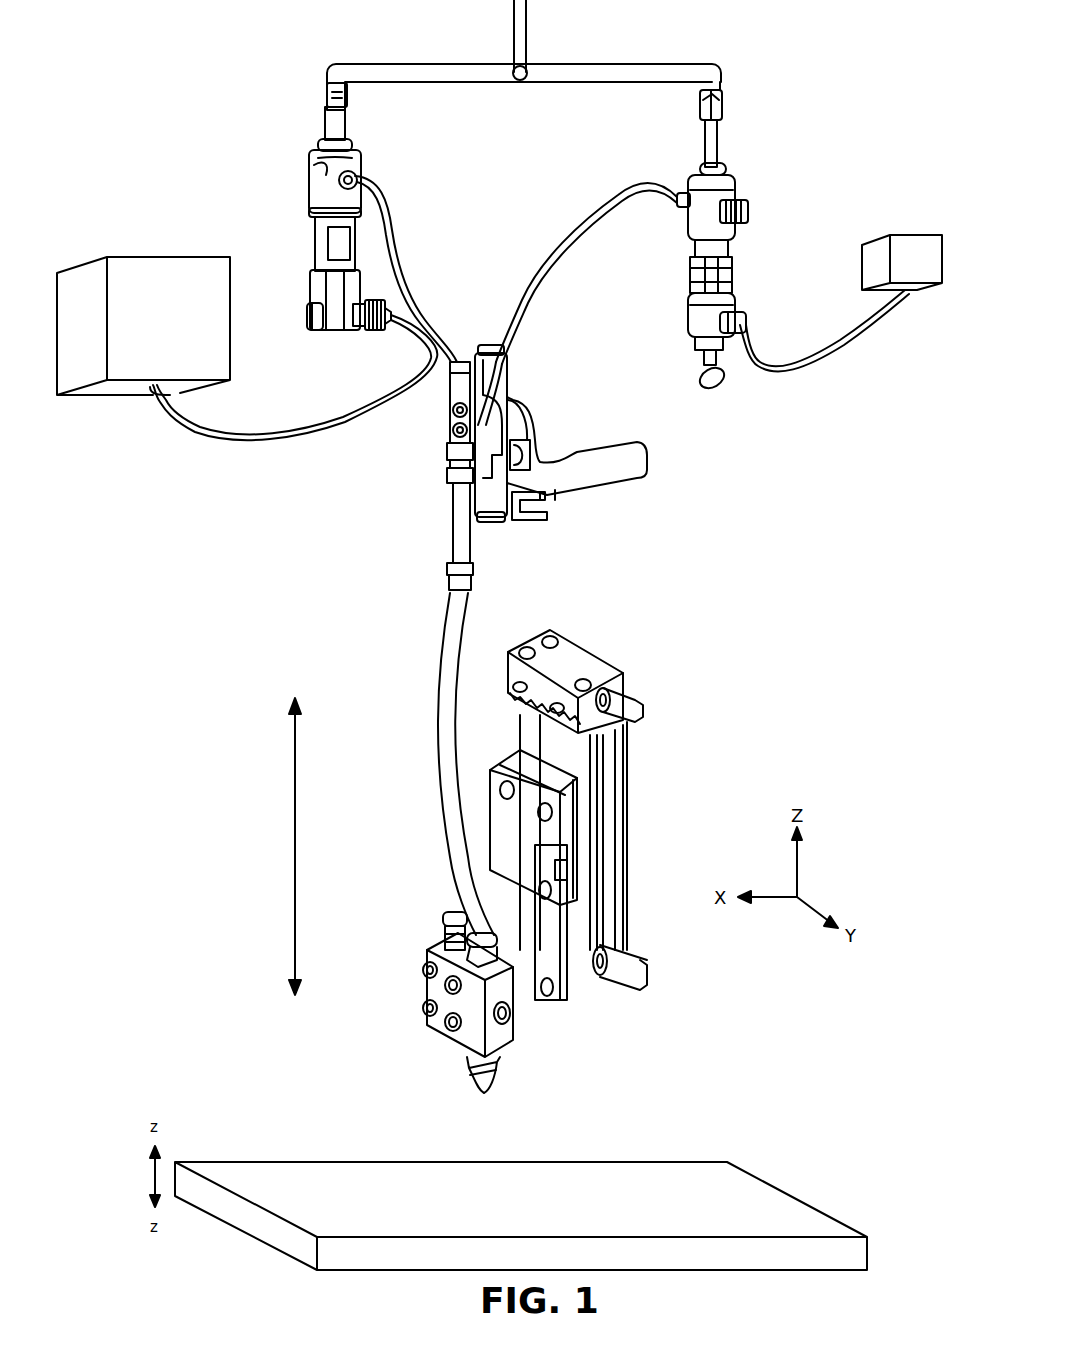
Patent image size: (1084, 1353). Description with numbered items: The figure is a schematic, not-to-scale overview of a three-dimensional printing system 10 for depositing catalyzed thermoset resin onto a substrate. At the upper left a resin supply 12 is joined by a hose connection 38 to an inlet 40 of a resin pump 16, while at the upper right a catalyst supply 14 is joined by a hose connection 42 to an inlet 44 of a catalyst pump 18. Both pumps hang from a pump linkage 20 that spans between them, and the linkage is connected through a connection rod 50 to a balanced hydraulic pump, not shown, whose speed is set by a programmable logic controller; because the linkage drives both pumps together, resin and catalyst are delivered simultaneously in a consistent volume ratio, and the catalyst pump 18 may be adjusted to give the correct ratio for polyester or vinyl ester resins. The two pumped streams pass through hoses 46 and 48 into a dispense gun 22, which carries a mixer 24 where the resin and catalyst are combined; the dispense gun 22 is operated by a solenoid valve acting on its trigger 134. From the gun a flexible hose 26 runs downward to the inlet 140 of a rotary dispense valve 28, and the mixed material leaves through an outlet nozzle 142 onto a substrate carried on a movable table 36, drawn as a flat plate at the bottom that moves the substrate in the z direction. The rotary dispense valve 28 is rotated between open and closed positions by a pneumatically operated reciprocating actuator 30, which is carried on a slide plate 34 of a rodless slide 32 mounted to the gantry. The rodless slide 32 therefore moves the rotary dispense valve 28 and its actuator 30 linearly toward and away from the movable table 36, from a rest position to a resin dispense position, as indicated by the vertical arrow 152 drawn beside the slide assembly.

The three-dimensional printing system 10 is at (772, 677).
The resin supply 12 is at (165, 285).
The catalyst supply 14 is at (912, 250).
The resin pump 16 is at (315, 160).
The catalyst pump 18 is at (725, 233).
The pump linkage 20 is at (383, 64).
The dispense gun 22 is at (583, 468).
The mixer 24 is at (450, 530).
The flexible hose 26 is at (447, 782).
The rotary dispense valve 28 is at (425, 993).
The actuator 30 is at (535, 1005).
The rodless slide 32 is at (623, 770).
The slide plate 34 is at (571, 792).
The movable table 36 is at (750, 1195).
The hose connection 38 is at (222, 444).
The inlet 40 is at (375, 333).
The hose connection 42 is at (858, 352).
The inlet 44 is at (737, 340).
The hose 46 is at (410, 285).
The hose 48 is at (612, 198).
The connection rod 50 is at (527, 20).
The trigger 134 is at (553, 510).
The inlet 140 is at (440, 928).
The outlet nozzle 142 is at (490, 1080).
The arrow 152 is at (295, 858).